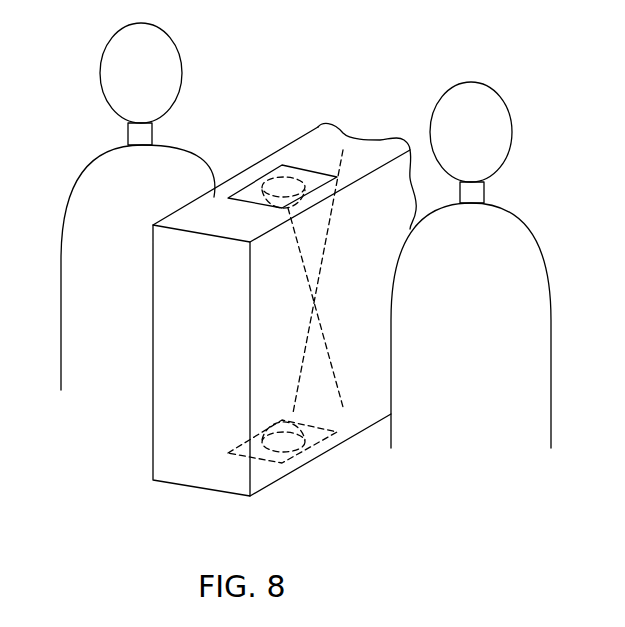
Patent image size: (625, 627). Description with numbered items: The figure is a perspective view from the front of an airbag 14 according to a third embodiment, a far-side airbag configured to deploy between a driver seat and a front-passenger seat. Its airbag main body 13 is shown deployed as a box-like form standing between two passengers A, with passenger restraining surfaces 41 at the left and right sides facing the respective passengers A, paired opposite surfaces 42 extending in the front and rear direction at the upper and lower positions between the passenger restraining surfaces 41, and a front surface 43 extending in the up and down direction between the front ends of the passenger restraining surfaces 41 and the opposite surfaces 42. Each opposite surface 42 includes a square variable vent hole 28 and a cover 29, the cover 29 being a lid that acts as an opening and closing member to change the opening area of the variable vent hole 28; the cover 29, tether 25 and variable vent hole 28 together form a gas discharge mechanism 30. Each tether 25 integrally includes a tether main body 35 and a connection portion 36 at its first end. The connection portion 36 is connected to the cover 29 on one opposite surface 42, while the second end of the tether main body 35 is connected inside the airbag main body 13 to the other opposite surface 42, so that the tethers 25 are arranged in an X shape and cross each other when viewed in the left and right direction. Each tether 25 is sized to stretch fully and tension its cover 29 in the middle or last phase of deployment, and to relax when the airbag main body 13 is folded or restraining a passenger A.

The passenger A is at (92, 170).
The airbag main body 13 is at (372, 140).
The airbag 14 is at (329, 123).
The tether 25 is at (303, 270).
The variable vent hole 28 is at (270, 182).
The cover 29 is at (237, 195).
The gas discharge mechanism 30 is at (295, 163).
The tether main body 35 is at (325, 342).
The connection portion 36 is at (303, 203).
The passenger restraining surface 41 is at (152, 440).
The opposite surface 42 is at (190, 222).
The front surface 43 is at (165, 400).